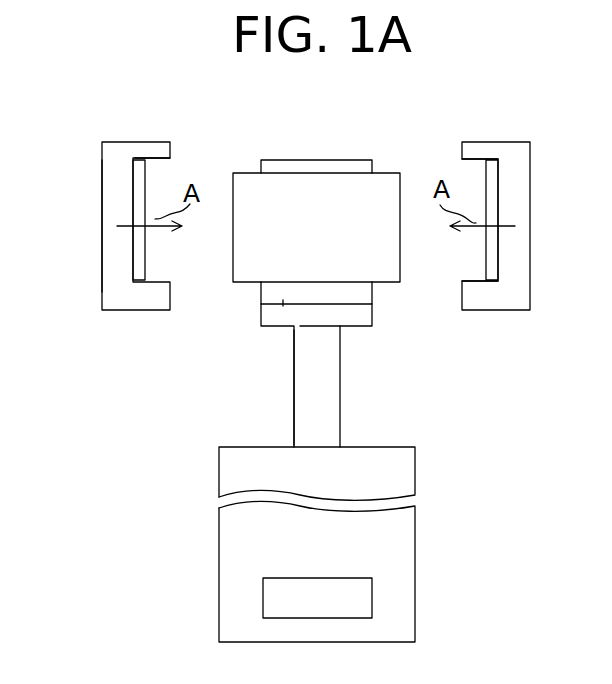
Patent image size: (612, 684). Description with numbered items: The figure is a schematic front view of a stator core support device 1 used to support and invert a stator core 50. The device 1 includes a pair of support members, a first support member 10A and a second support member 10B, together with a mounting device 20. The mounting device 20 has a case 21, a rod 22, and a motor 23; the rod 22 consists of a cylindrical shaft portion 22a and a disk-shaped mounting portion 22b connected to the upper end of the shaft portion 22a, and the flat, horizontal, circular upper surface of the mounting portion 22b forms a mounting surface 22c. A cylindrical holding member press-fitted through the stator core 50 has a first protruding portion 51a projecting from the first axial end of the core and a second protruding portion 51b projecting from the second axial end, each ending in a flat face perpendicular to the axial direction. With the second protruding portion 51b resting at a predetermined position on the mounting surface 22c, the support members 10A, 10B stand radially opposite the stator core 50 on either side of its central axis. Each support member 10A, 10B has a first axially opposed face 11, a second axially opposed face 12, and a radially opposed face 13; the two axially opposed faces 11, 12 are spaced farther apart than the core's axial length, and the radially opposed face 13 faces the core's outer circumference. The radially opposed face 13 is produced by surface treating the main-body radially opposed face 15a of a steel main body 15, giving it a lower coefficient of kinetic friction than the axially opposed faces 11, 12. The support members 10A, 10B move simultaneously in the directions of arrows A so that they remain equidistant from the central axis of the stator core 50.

The stator core support device 1 is at (538, 168).
The first support member 10A is at (114, 193).
The second support member 10B is at (520, 195).
The first axially opposed face 11 is at (462, 168).
The second axially opposed face 12 is at (476, 272).
The radially opposed face 13 is at (146, 178).
The main body 15 is at (113, 238).
The main-body radially opposed face 15a is at (138, 247).
The mounting device 20 is at (432, 468).
The case 21 is at (416, 565).
The rod 22 is at (341, 368).
The shaft portion 22a is at (293, 366).
The mounting portion 22b is at (363, 315).
The mounting surface 22c is at (283, 302).
The motor 23 is at (372, 605).
The stator core 50 is at (386, 178).
The first protruding portion 51a is at (322, 160).
The second protruding portion 51b is at (265, 295).